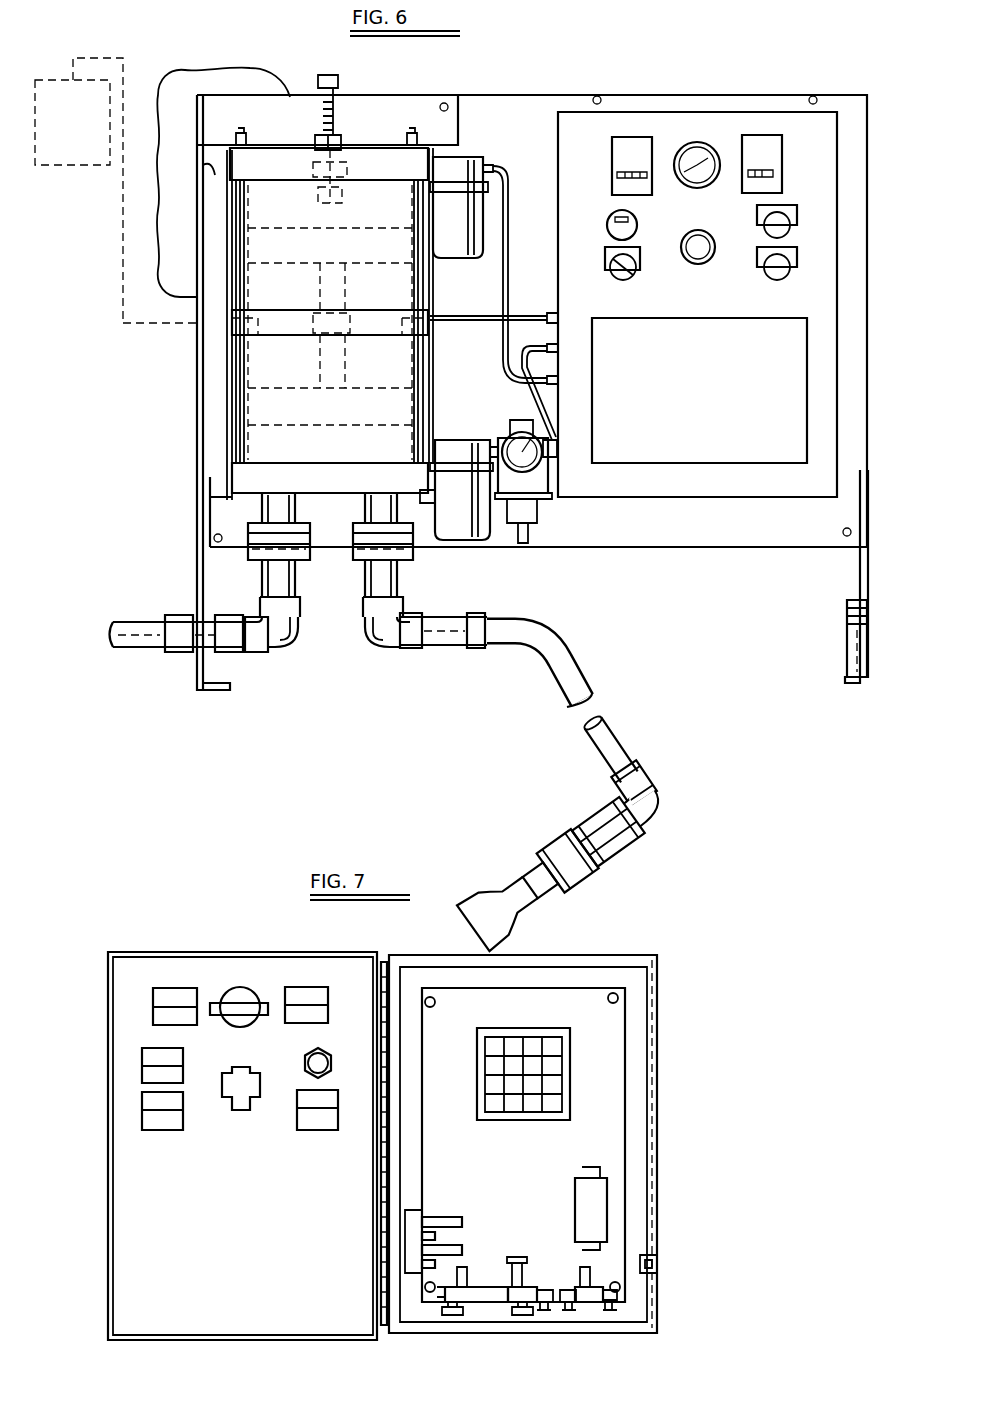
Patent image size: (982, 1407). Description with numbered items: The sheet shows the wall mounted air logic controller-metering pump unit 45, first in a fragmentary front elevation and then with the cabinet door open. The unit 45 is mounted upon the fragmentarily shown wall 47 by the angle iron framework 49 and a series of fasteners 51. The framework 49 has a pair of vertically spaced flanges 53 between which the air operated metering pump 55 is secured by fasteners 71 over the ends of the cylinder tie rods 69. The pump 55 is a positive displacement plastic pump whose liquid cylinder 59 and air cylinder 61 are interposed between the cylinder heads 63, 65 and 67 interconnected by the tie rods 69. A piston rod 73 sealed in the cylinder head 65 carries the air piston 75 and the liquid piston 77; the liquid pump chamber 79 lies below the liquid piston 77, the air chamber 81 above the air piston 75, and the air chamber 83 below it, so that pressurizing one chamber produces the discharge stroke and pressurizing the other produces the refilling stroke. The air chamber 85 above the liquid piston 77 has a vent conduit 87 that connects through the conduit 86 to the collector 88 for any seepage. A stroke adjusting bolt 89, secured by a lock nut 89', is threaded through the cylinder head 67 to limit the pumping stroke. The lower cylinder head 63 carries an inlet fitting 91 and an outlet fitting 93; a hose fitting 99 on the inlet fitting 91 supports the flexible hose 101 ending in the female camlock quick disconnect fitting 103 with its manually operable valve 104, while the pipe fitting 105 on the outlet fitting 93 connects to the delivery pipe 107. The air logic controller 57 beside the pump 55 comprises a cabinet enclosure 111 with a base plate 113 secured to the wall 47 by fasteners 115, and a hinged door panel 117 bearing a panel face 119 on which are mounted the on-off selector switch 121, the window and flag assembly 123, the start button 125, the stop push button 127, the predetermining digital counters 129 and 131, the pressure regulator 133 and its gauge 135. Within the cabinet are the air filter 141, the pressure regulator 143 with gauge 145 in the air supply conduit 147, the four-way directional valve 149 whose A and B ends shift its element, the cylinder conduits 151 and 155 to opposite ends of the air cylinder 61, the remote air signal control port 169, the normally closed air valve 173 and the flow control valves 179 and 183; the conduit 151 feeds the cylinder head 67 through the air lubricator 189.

In FIG. 6, the air logic controller-metering pump unit 45 is at (622, 77).
In FIG. 6, the wall 47 is at (228, 72).
In FIG. 6, the angle iron framework 49 is at (195, 312).
In FIG. 6, the fasteners 51 is at (446, 104).
In FIG. 6, the flanges 53 is at (207, 170).
In FIG. 6, the air operated metering pump 55 is at (220, 356).
In FIG. 6, the air logic controller 57 is at (708, 104).
In FIG. 6, the liquid cylinder 59 is at (238, 400).
In FIG. 6, the air cylinder 61 is at (232, 248).
In FIG. 6, the cylinder head 63 is at (245, 478).
In FIG. 6, the cylinder head 65 is at (372, 328).
In FIG. 6, the cylinder head 67 is at (287, 162).
In FIG. 6, the cylinder tie rods 69 is at (240, 133).
In FIG. 6, the fasteners 71 is at (407, 133).
In FIG. 6, the piston rod 73 is at (350, 292).
In FIG. 6, the air piston 75 is at (358, 258).
In FIG. 6, the liquid piston 77 is at (358, 417).
In FIG. 6, the liquid pump chamber 79 is at (437, 433).
In FIG. 6, the air chamber 81 is at (300, 213).
In FIG. 6, the air chamber 83 is at (300, 303).
In FIG. 6, the air chamber 85 is at (300, 370).
In FIG. 6, the conduit 86 is at (122, 226).
In FIG. 6, the vent conduit 87 is at (228, 370).
In FIG. 6, the collector 88 is at (82, 158).
In FIG. 6, the stroke adjusting bolt 89 is at (330, 87).
In FIG. 6, the lock nut 89' is at (347, 151).
In FIG. 6, the inlet fitting 91 is at (406, 552).
In FIG. 6, the outlet fitting 93 is at (259, 552).
In FIG. 6, the hose fitting 99 is at (451, 637).
In FIG. 6, the flexible hose 101 is at (624, 750).
In FIG. 6, the female camlock quick disconnect fitting 103 is at (503, 893).
In FIG. 6, the manually operable valve 104 is at (548, 857).
In FIG. 6, the pipe fitting 105 is at (298, 634).
In FIG. 6, the delivery pipe 107 is at (148, 642).
In FIG. 6, the cabinet enclosure 111 is at (777, 505).
In FIG. 7, the cabinet enclosure 111 is at (655, 1060).
In FIG. 7, the base plate 113 is at (608, 1116).
In FIG. 7, the fasteners 115 is at (618, 1002).
In FIG. 6, the hinged door panel 117 is at (703, 492).
In FIG. 7, the hinged door panel 117 is at (108, 1178).
In FIG. 6, the panel face 119 is at (755, 120).
In FIG. 6, the on-off selector switch 121 is at (614, 272).
In FIG. 7, the on-off selector switch 121 is at (320, 1122).
In FIG. 6, the window and flag assembly 123 is at (610, 228).
In FIG. 7, the window and flag assembly 123 is at (326, 1054).
In FIG. 6, the start button 125 is at (786, 206).
In FIG. 7, the start button 125 is at (181, 1057).
In FIG. 6, the stop push button 127 is at (777, 272).
In FIG. 7, the stop push button 127 is at (163, 1124).
In FIG. 6, the predetermining digital counter 129 is at (615, 152).
In FIG. 7, the predetermining digital counter 129 is at (312, 993).
In FIG. 6, the second predetermining countdown digital counter 131 is at (777, 150).
In FIG. 7, the second predetermining countdown digital counter 131 is at (174, 995).
In FIG. 6, the pressure regulator 133 is at (698, 258).
In FIG. 7, the pressure regulator 133 is at (246, 1108).
In FIG. 6, the pressure regulator gauge 135 is at (694, 180).
In FIG. 7, the pressure regulator gauge 135 is at (243, 993).
In FIG. 6, the air filter 141 is at (462, 532).
In FIG. 6, the pressure regulator 143 is at (545, 497).
In FIG. 6, the gauge 145 is at (548, 458).
In FIG. 6, the air supply conduit 147 is at (530, 400).
In FIG. 7, the air supply conduit 147 is at (440, 1237).
In FIG. 7, the four-way directional valve 149 is at (598, 1213).
In FIG. 6, the air conduit 151 is at (510, 216).
In FIG. 7, the air conduit 151 is at (465, 1250).
In FIG. 6, the air conduit 155 is at (479, 322).
In FIG. 7, the air conduit 155 is at (446, 1217).
In FIG. 7, the remote air signal control port 169 is at (655, 1267).
In FIG. 7, the air valve 173 is at (585, 1302).
In FIG. 7, the flow control valve 179 is at (466, 1300).
In FIG. 7, the flow control valve 183 is at (527, 1292).
In FIG. 6, the air lubricator 189 is at (457, 250).
In FIG. 7, the A end of four-way valve A is at (607, 1175).
In FIG. 7, the B end of four-way valve B is at (607, 1245).